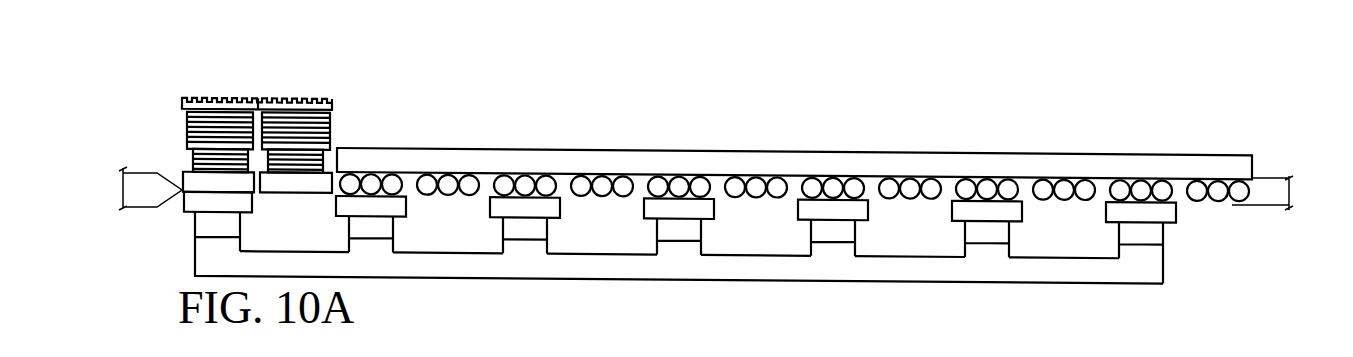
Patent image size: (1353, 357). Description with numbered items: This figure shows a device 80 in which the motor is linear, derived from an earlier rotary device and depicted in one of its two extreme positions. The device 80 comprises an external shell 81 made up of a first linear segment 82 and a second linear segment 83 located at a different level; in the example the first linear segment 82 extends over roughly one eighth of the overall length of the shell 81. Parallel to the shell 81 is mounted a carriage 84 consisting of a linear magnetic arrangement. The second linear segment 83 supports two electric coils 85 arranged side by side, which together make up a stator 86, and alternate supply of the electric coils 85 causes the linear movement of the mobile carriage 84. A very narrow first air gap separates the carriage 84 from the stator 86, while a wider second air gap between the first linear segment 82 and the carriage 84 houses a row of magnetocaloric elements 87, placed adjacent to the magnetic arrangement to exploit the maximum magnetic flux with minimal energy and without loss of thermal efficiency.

The device 80 is at (1231, 118).
The external shell 81 is at (688, 122).
The first linear segment 82 is at (543, 152).
The second linear segment 83 is at (328, 100).
The carriage 84 is at (1172, 273).
The electric coils 85 is at (298, 113).
The stator 86 is at (181, 130).
The magnetocaloric elements 87 is at (853, 182).